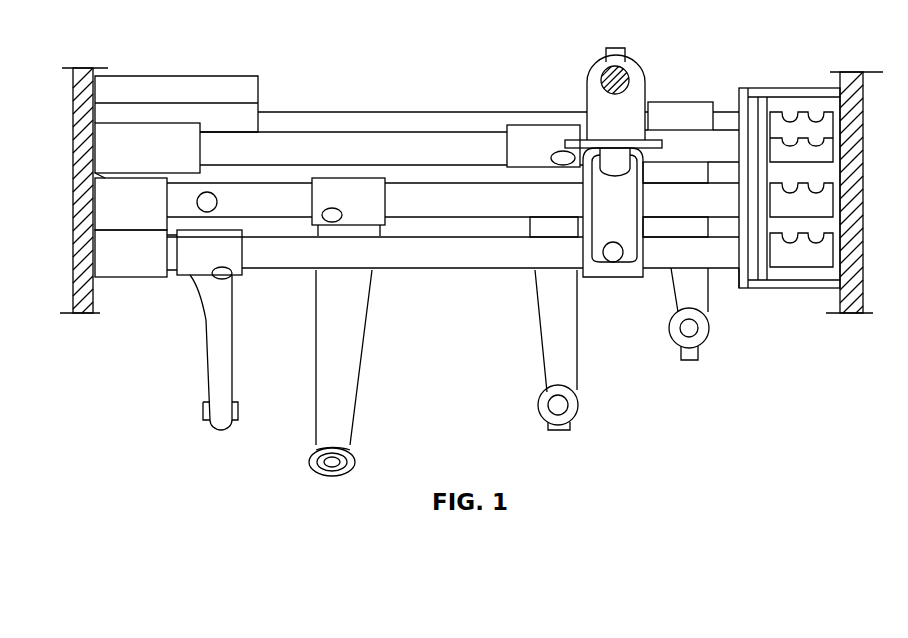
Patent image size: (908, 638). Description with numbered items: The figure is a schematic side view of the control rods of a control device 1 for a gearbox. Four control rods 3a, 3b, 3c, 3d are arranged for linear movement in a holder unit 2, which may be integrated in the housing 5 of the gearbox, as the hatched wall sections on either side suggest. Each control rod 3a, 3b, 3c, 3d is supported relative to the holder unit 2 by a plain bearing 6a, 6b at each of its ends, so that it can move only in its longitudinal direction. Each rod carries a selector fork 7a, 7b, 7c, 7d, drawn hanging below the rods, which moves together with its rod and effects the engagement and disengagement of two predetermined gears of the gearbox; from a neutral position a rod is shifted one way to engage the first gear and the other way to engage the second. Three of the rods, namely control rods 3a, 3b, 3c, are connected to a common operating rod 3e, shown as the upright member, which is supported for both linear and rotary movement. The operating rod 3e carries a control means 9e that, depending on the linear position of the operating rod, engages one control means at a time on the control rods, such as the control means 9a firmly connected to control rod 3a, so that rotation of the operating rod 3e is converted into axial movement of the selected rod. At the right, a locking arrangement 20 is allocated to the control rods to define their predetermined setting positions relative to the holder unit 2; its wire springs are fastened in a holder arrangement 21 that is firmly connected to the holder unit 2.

The control device 1 is at (503, 80).
The holder unit 2 is at (154, 56).
The control rod 3a is at (467, 258).
The control rod 3b is at (407, 203).
The control rod 3c is at (288, 138).
The control rod 3d is at (340, 122).
The operating rod 3e is at (625, 76).
The housing 5 is at (80, 82).
The plain bearing 6a is at (741, 266).
The plain bearing 6b is at (135, 270).
The selector fork 7a is at (226, 362).
The selector fork 7b is at (349, 375).
The selector fork 7c is at (562, 368).
The selector fork 7d is at (684, 300).
The control means 9a is at (625, 212).
The control means 9e is at (608, 118).
The locking arrangement 20 is at (756, 70).
The holder arrangement 21 is at (778, 290).